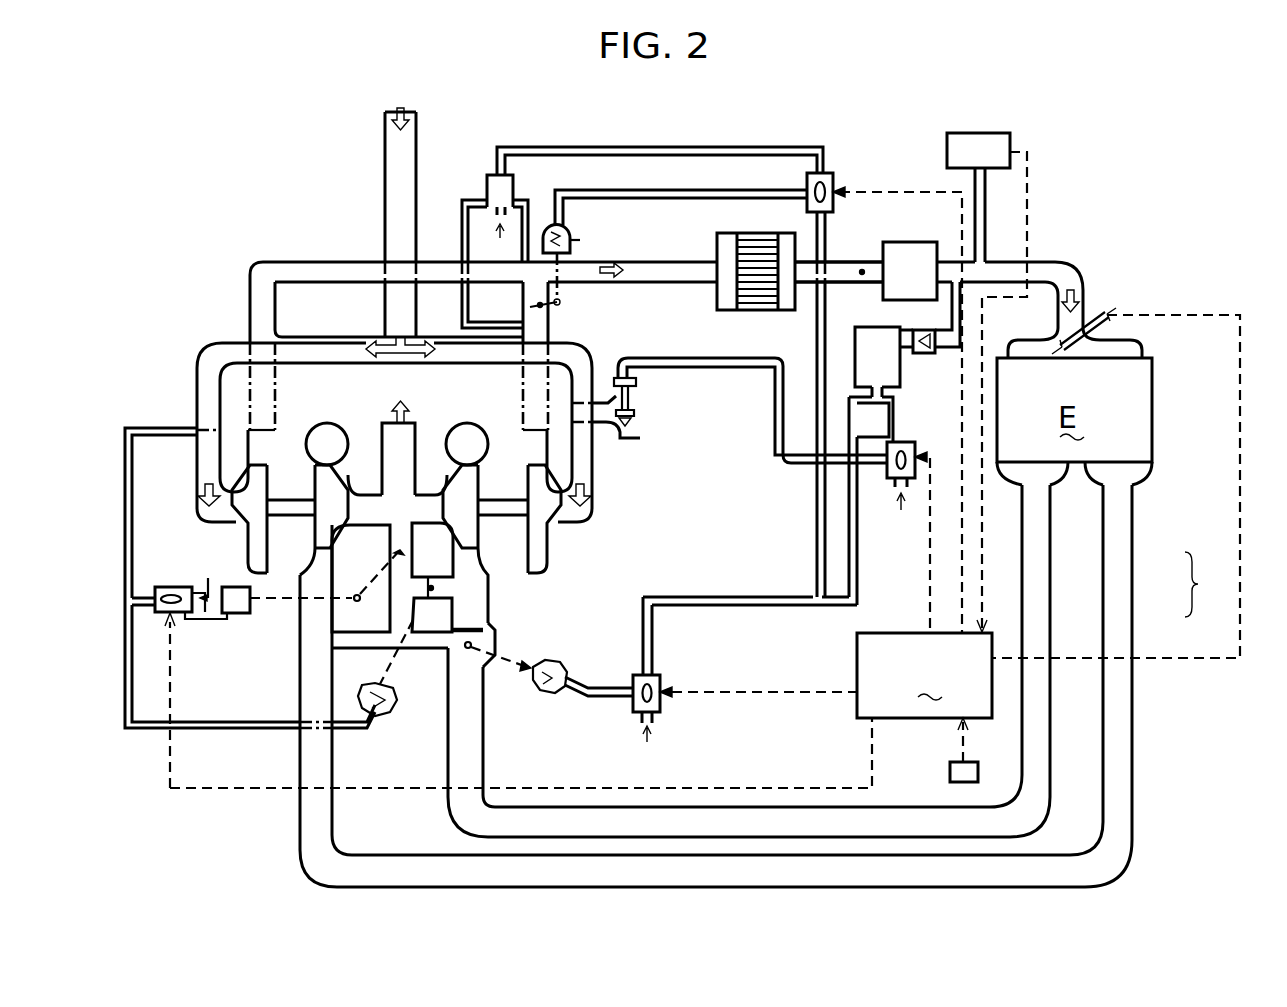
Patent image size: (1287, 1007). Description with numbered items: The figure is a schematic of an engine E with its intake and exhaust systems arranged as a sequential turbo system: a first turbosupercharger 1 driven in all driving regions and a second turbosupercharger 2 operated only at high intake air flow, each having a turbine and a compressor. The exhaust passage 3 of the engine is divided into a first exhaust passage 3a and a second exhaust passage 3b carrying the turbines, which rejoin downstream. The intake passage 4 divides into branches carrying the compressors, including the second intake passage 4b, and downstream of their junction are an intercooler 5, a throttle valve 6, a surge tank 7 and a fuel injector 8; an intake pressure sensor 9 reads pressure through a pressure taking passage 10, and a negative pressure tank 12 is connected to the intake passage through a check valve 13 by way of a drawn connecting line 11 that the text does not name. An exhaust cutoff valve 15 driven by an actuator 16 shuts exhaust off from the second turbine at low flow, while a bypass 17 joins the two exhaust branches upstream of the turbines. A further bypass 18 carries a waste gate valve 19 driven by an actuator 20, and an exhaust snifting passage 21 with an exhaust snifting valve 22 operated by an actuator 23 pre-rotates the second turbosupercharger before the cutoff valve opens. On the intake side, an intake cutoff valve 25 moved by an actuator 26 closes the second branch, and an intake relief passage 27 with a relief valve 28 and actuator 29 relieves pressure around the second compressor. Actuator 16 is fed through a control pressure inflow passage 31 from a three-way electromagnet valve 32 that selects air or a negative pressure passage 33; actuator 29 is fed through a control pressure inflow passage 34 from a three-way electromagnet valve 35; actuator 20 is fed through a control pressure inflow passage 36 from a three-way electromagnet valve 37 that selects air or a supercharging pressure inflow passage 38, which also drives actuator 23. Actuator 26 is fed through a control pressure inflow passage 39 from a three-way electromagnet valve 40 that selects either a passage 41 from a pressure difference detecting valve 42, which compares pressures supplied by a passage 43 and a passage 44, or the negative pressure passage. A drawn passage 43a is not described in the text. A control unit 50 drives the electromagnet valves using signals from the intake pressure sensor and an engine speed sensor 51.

The first turbosupercharger 1 is at (294, 474).
The second turbosupercharger 2 is at (509, 474).
The exhaust passage 3 is at (420, 423).
The first exhaust passage 3a is at (1130, 596).
The second exhaust passage 3b is at (1050, 563).
The intake passage 4 is at (385, 188).
The second intake passage 4b is at (548, 328).
The intercooler 5 is at (760, 310).
The throttle valve 6 is at (862, 270).
The surge tank 7 is at (912, 242).
The fuel injector 8 is at (1095, 318).
The intake pressure sensor 9 is at (990, 133).
The pressure taking passage 10 is at (985, 200).
The bypass passage 11 is at (952, 320).
The negative pressure tank 12 is at (900, 370).
The check valve 13 is at (924, 353).
The exhaust cutoff valve 15 is at (483, 626).
The actuator 16 is at (553, 694).
The bypass 17 is at (422, 650).
The bypass 18 is at (388, 556).
The waste gate valve 19 is at (400, 545).
The actuator 20 is at (245, 614).
The exhaust snifting passage 21 is at (431, 577).
The exhaust snifting valve 22 is at (432, 590).
The actuator 23 is at (398, 716).
The intake cutoff valve 25 is at (530, 307).
The actuator 26 is at (572, 238).
The intake relief passage 27 is at (640, 440).
The relief valve 28 is at (638, 412).
The actuator 29 is at (638, 382).
The control pressure inflow passage 31 is at (605, 687).
The three-way electromagnet valve 32 is at (660, 675).
The negative pressure passage 33 is at (813, 515).
The control pressure inflow passage 34 is at (775, 440).
The three-way electromagnet valve 35 is at (915, 447).
The control pressure inflow passage 36 is at (200, 620).
The three-way electromagnet valve 37 is at (172, 587).
The supercharging pressure inflow passage 38 is at (132, 470).
The control pressure inflow passage 39 is at (660, 190).
The three-way electromagnet valve 40 is at (835, 178).
The passage 41 is at (700, 147).
The pressure difference detecting valve 42 is at (490, 170).
The passage 43 is at (550, 225).
The passage 43a is at (250, 322).
The passage 44 is at (462, 215).
The control unit 50 is at (924, 675).
The engine speed sensor 51 is at (950, 772).